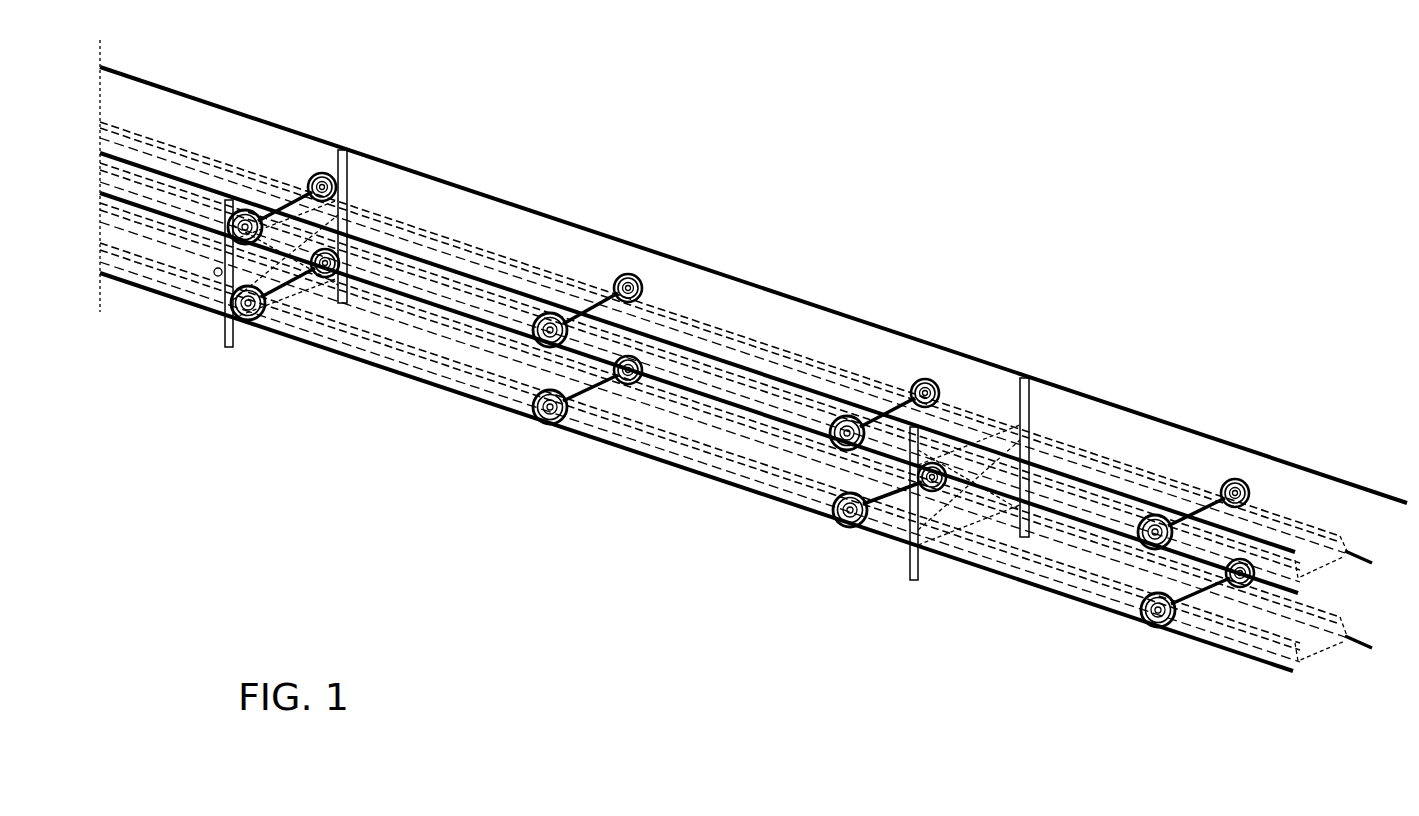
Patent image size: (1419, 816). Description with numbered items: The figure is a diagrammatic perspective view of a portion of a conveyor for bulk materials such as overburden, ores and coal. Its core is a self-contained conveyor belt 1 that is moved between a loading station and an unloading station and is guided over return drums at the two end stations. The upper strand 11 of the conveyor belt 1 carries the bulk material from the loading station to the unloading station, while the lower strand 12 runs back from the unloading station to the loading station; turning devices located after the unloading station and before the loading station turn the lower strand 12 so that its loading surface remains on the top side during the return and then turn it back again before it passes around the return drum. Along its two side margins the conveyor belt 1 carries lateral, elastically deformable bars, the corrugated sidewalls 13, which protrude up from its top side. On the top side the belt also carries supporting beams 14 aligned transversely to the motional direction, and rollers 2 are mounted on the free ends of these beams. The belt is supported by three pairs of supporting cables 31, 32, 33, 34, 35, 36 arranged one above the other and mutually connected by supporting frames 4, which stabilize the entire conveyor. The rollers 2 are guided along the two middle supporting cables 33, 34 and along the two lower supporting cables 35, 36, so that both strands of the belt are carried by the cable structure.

The conveyor belt 1 is at (753, 377).
The rollers 2 is at (641, 364).
The supporting frames 4 is at (228, 308).
The upper strand 11 is at (1347, 557).
The lower strand 12 is at (1347, 645).
The corrugated sidewalls 13 is at (1322, 546).
The supporting beams 14 is at (603, 307).
The supporting cable 31 is at (1283, 543).
The supporting cable 32 is at (1387, 496).
The middle supporting cable 33 is at (1291, 587).
The middle supporting cable 34 is at (1358, 553).
The lower supporting cable 35 is at (1283, 666).
The lower supporting cable 36 is at (1358, 635).